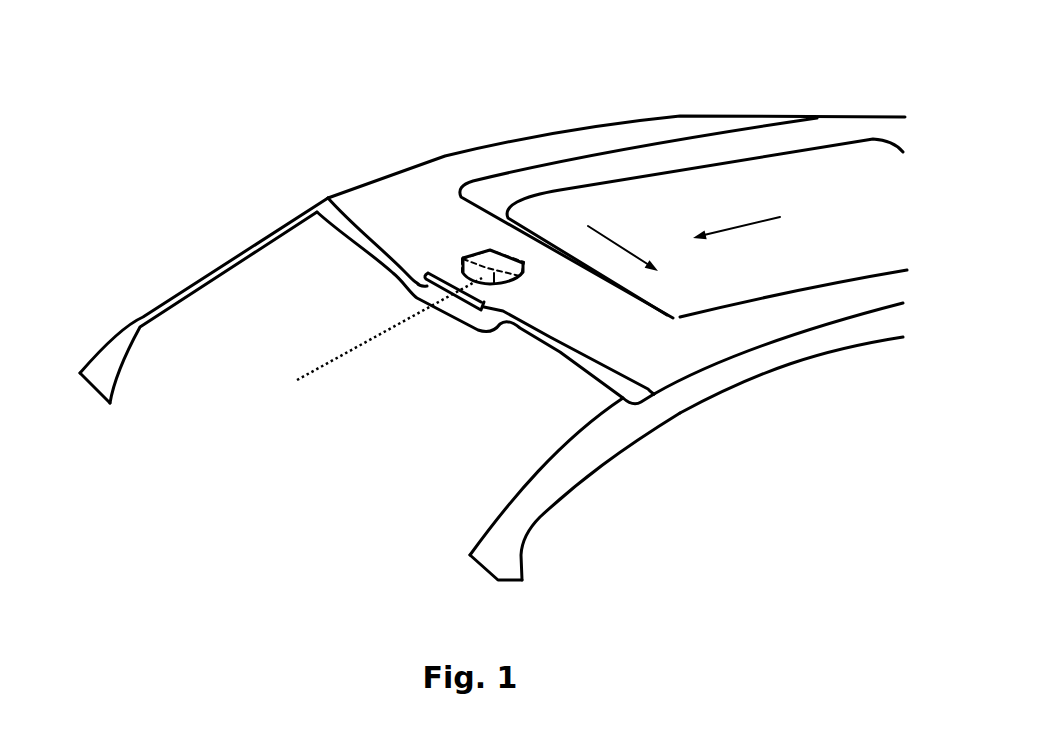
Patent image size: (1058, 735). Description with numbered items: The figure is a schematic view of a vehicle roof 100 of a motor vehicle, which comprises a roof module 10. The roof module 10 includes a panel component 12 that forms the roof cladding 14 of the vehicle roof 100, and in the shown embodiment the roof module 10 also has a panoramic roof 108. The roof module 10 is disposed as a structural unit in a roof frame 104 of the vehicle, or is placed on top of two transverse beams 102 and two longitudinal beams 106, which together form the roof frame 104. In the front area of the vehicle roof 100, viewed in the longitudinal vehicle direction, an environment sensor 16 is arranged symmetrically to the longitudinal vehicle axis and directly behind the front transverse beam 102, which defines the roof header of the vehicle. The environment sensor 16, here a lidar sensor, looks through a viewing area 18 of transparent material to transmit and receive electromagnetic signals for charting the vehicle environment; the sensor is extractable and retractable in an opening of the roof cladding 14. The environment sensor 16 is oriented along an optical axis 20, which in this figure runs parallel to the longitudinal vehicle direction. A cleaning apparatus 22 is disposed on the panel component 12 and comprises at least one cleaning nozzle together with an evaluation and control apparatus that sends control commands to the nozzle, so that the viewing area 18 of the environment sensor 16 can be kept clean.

The vehicle roof 100 is at (288, 158).
The roof module 10 is at (417, 176).
The panel component 12 is at (563, 147).
The roof cladding 14 is at (510, 155).
The environment sensor 16 is at (494, 284).
The viewing area 18 is at (483, 273).
The optical axis 20 is at (390, 332).
The cleaning apparatus 22 is at (427, 286).
The front transverse beam 102 is at (368, 242).
The roof frame 104 is at (736, 382).
The longitudinal beam 106 is at (860, 327).
The panoramic roof 108 is at (673, 190).